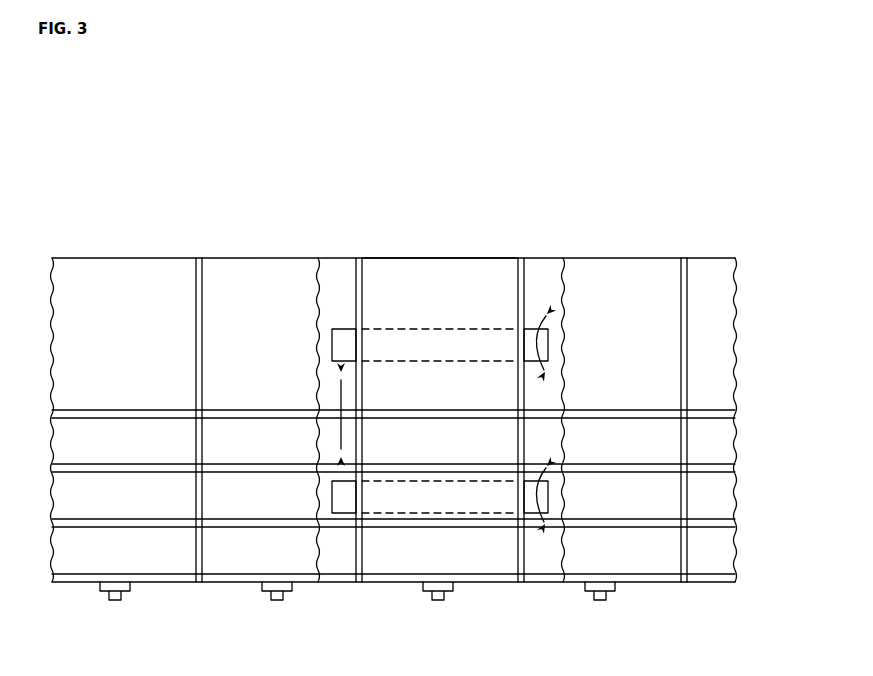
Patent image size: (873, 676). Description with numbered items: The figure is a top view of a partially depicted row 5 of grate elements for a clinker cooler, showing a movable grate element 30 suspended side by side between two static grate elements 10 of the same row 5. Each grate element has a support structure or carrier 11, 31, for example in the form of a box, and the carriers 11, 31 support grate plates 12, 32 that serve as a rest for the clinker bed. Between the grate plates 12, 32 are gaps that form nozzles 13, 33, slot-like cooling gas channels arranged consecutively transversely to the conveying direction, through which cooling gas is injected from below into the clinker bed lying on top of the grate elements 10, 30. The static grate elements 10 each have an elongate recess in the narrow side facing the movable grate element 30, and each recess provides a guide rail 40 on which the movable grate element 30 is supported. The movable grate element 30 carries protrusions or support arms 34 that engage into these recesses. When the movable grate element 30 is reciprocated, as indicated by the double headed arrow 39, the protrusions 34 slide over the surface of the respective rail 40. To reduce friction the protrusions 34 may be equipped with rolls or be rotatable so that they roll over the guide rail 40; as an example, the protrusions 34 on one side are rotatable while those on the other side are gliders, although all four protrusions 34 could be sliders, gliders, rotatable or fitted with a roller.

The row 5 is at (752, 170).
The static grate element 10 is at (115, 248).
The carrier 11 is at (248, 258).
The grate plate 12 is at (150, 280).
The nozzle 13 is at (246, 414).
The movable grate element 30 is at (432, 222).
The carrier 31 is at (481, 258).
The grate plate 32 is at (463, 440).
The nozzle 33 is at (393, 523).
The protrusion 34 is at (332, 345).
The double headed arrow 39 is at (345, 403).
The guide rail 40 is at (336, 280).